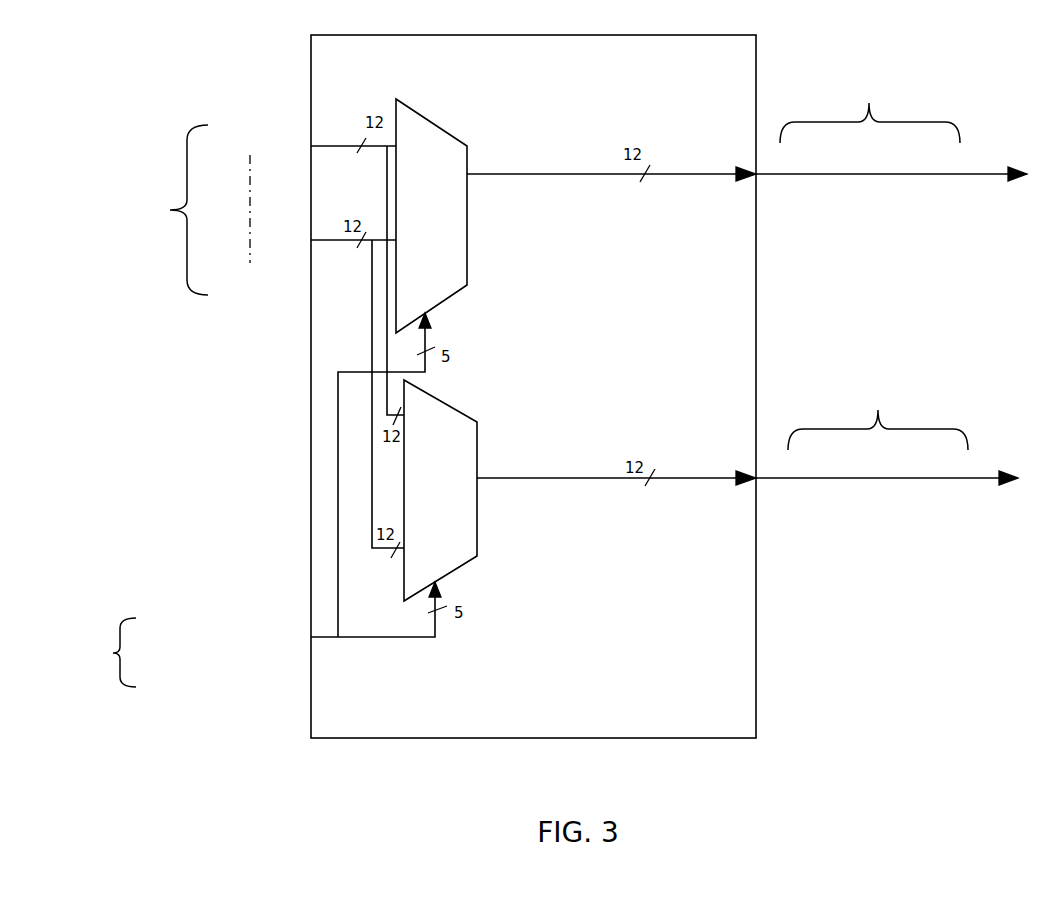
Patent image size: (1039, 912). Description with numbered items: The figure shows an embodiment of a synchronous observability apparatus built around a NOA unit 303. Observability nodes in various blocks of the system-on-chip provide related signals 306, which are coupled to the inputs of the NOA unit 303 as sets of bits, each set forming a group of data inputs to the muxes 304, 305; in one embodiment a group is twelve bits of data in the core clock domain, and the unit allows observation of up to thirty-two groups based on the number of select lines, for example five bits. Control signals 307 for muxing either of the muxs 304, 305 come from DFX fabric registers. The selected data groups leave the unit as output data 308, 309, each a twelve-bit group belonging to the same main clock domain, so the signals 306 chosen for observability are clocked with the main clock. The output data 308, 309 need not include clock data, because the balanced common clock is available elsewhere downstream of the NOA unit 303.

The NOA unit 303 is at (705, 65).
The mux 304 is at (430, 120).
The mux 305 is at (438, 395).
The signals 306 is at (204, 210).
The control signals 307 is at (176, 652).
The output data 308 is at (870, 119).
The output data 309 is at (878, 430).